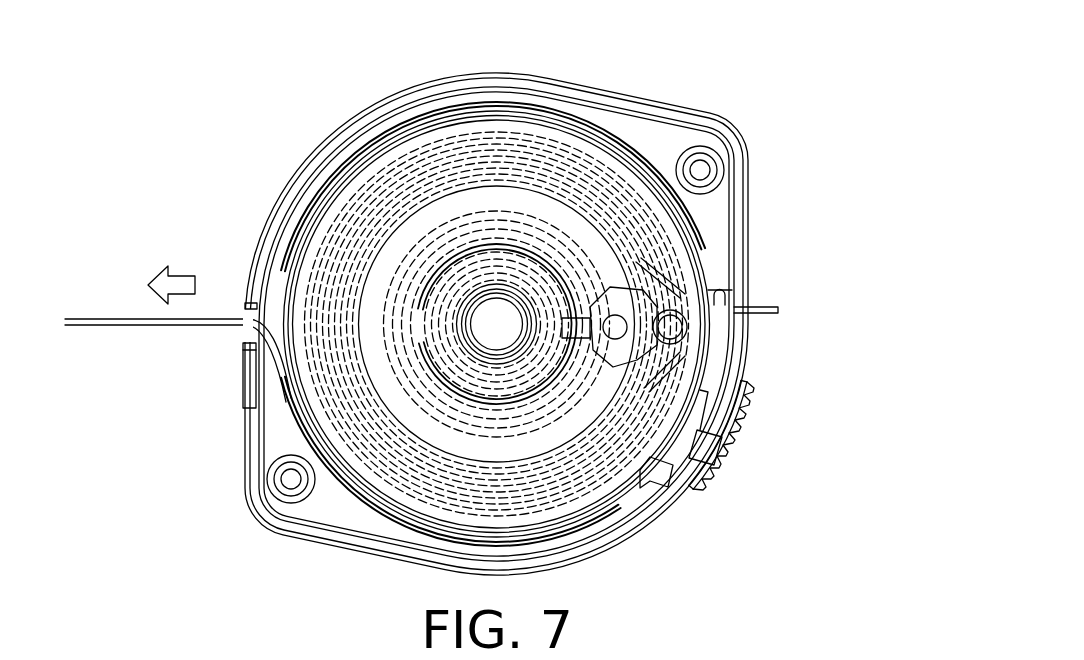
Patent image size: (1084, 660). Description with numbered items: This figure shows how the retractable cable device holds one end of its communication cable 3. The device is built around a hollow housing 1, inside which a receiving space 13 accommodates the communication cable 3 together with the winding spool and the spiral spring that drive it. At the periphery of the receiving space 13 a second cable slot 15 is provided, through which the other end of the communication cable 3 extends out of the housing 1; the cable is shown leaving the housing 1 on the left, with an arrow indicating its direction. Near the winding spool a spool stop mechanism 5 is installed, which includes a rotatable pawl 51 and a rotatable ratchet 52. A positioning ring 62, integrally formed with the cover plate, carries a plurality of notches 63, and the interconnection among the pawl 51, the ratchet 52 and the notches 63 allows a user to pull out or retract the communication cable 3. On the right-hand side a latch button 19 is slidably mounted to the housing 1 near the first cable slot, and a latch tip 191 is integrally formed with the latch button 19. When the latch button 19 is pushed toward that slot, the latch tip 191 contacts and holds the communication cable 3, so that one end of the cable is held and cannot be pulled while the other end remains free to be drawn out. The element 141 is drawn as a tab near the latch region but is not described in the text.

The housing 1 is at (392, 80).
The communication cable 3 is at (125, 318).
The spool stop mechanism 5 is at (680, 278).
The receiving space 13 is at (279, 310).
The second cable slot 15 is at (243, 335).
The latch button 19 is at (745, 445).
The pawl 51 is at (728, 297).
The ratchet 52 is at (610, 295).
The positioning ring 62 is at (521, 249).
The notches 63 is at (421, 318).
The push tab 141 is at (780, 310).
The latch tip 191 is at (745, 300).